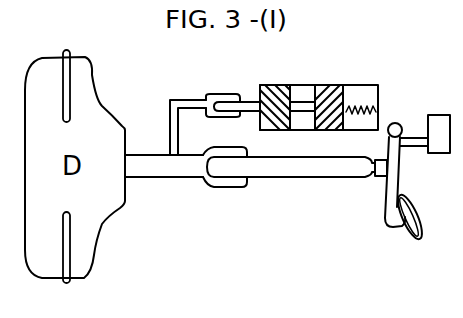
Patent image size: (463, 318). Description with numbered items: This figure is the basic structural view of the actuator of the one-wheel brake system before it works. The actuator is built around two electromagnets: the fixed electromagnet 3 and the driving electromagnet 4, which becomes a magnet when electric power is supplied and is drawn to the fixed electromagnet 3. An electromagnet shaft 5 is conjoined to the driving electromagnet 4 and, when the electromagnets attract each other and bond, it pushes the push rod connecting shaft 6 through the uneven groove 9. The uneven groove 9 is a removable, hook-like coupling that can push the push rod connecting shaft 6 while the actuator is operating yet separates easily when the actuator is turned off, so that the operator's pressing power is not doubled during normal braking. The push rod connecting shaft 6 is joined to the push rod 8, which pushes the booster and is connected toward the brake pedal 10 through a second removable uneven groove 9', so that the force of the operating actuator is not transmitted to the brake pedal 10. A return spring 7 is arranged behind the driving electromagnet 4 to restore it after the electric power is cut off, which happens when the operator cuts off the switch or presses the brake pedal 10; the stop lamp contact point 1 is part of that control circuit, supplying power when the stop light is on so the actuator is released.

The stop lamp contact point 1 is at (425, 134).
The fixed electromagnet 3 is at (277, 86).
The driving electromagnet 4 is at (333, 86).
The electromagnet shaft 5 is at (251, 88).
The push rod connecting shaft 6 is at (191, 100).
The return spring 7 is at (373, 108).
The push rod 8 is at (172, 178).
The uneven groove 9 is at (223, 80).
The uneven groove 9' is at (227, 185).
The brake pedal 10 is at (424, 219).